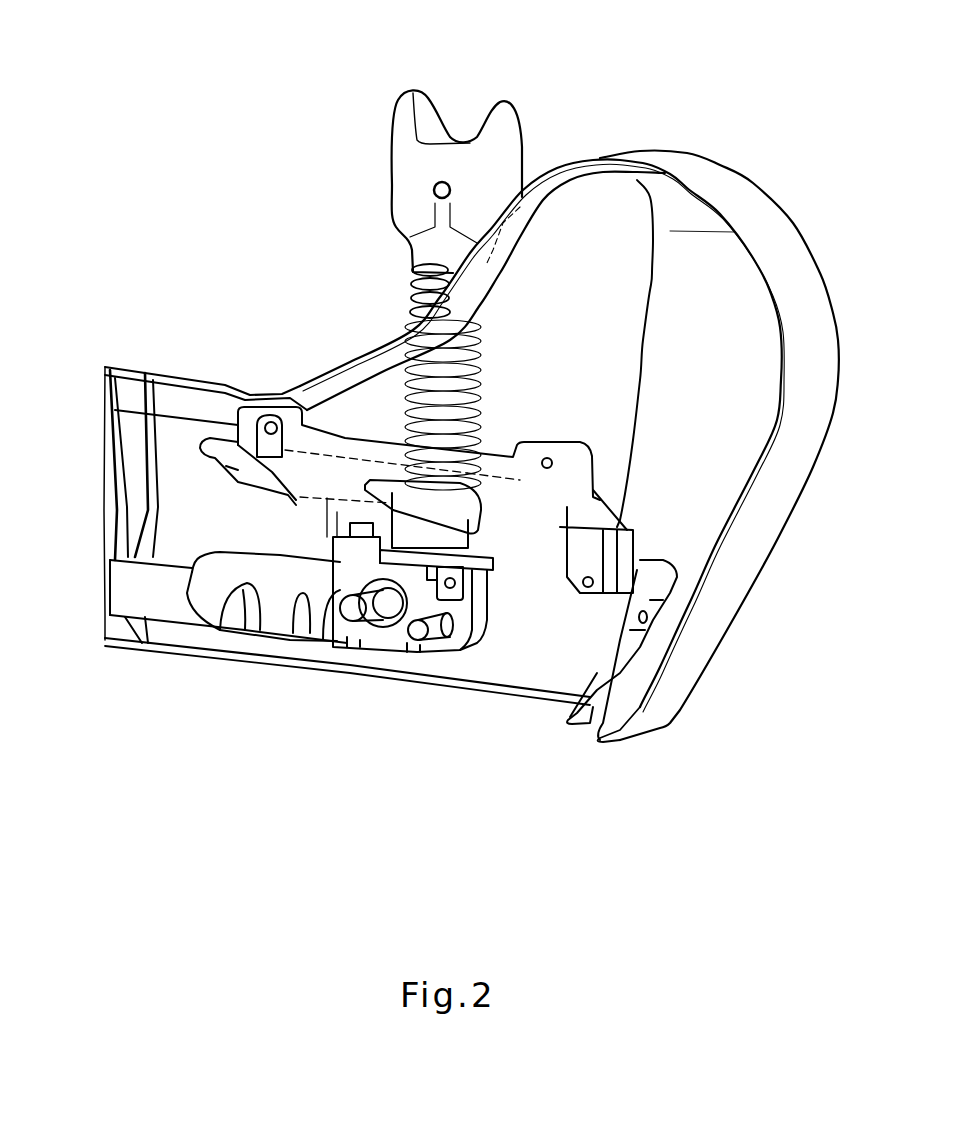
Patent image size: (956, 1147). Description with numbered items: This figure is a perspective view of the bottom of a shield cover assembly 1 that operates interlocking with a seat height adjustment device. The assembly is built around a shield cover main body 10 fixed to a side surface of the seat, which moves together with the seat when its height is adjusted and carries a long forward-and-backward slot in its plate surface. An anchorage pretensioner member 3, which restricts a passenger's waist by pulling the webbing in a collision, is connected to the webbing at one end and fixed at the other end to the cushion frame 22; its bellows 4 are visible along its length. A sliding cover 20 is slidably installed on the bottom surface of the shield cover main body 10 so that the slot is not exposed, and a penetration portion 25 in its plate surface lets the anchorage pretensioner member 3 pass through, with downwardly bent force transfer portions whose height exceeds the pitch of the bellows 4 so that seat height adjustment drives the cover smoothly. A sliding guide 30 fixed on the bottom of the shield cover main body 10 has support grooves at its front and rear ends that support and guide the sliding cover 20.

The shield cover assembly 1 is at (590, 100).
The anchorage pretensioner member 3 is at (400, 200).
The bellows 4 is at (415, 295).
The shield cover main body 10 is at (770, 513).
The sliding cover 20 is at (202, 455).
The cushion frame 22 is at (230, 597).
The penetration portion 25 is at (473, 520).
The sliding guide 30 is at (330, 560).